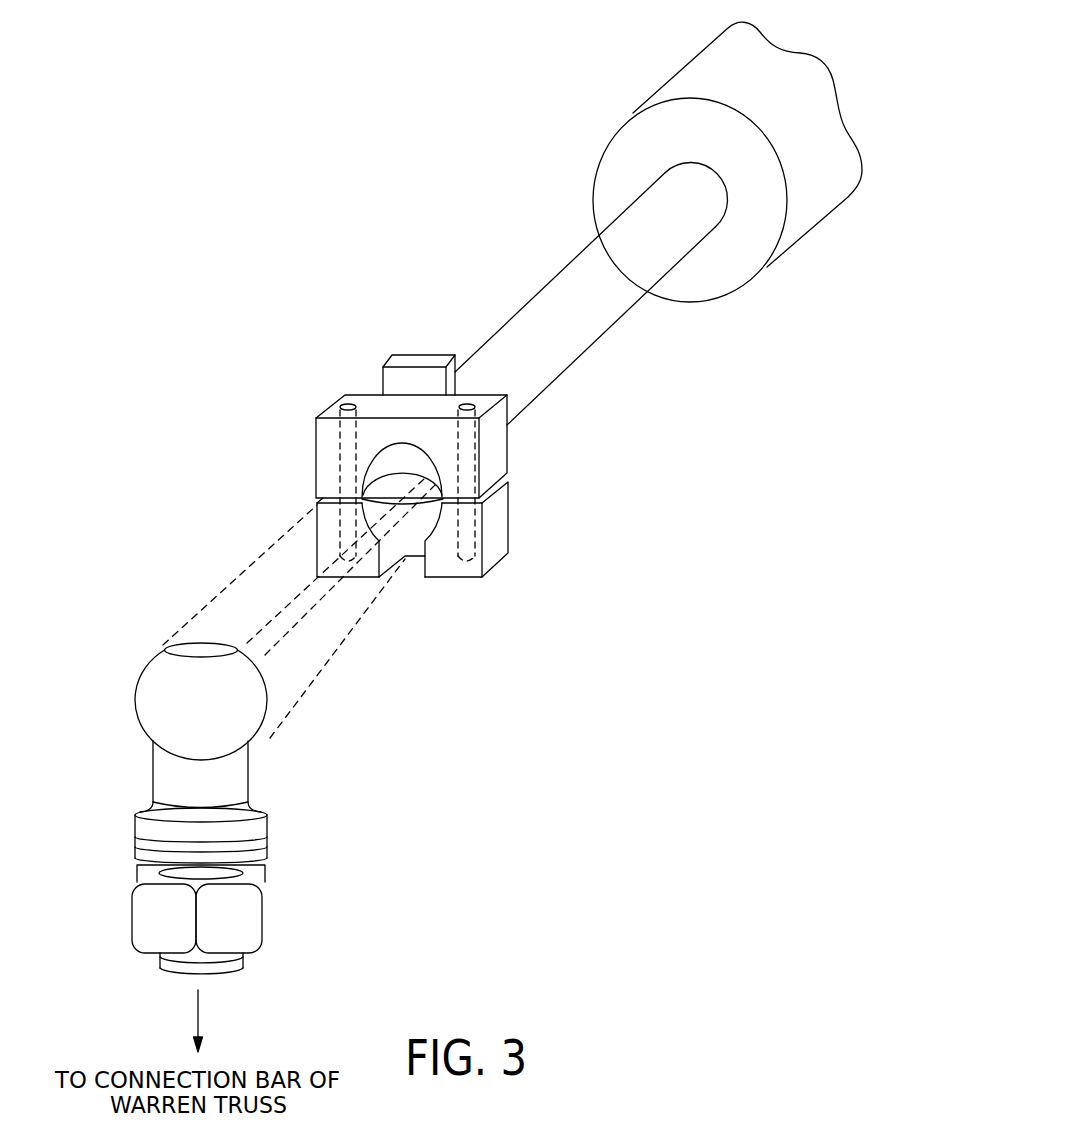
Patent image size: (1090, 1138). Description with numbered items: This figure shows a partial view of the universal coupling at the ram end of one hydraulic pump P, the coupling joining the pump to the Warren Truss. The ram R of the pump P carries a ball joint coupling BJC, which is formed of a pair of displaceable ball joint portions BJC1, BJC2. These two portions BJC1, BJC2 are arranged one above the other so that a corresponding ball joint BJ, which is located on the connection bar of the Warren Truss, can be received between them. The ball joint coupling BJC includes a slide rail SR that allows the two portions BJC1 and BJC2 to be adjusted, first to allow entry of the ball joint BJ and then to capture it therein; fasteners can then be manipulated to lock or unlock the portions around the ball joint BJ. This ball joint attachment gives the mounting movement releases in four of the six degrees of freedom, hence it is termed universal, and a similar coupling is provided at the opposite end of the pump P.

The pump P is at (615, 111).
The ram R is at (532, 290).
The slide rail SR is at (378, 378).
The ball joint coupling BJC is at (368, 441).
The ball joint portion BJC1 is at (317, 453).
The ball joint portion BJC2 is at (495, 518).
The ball joint BJ is at (263, 742).